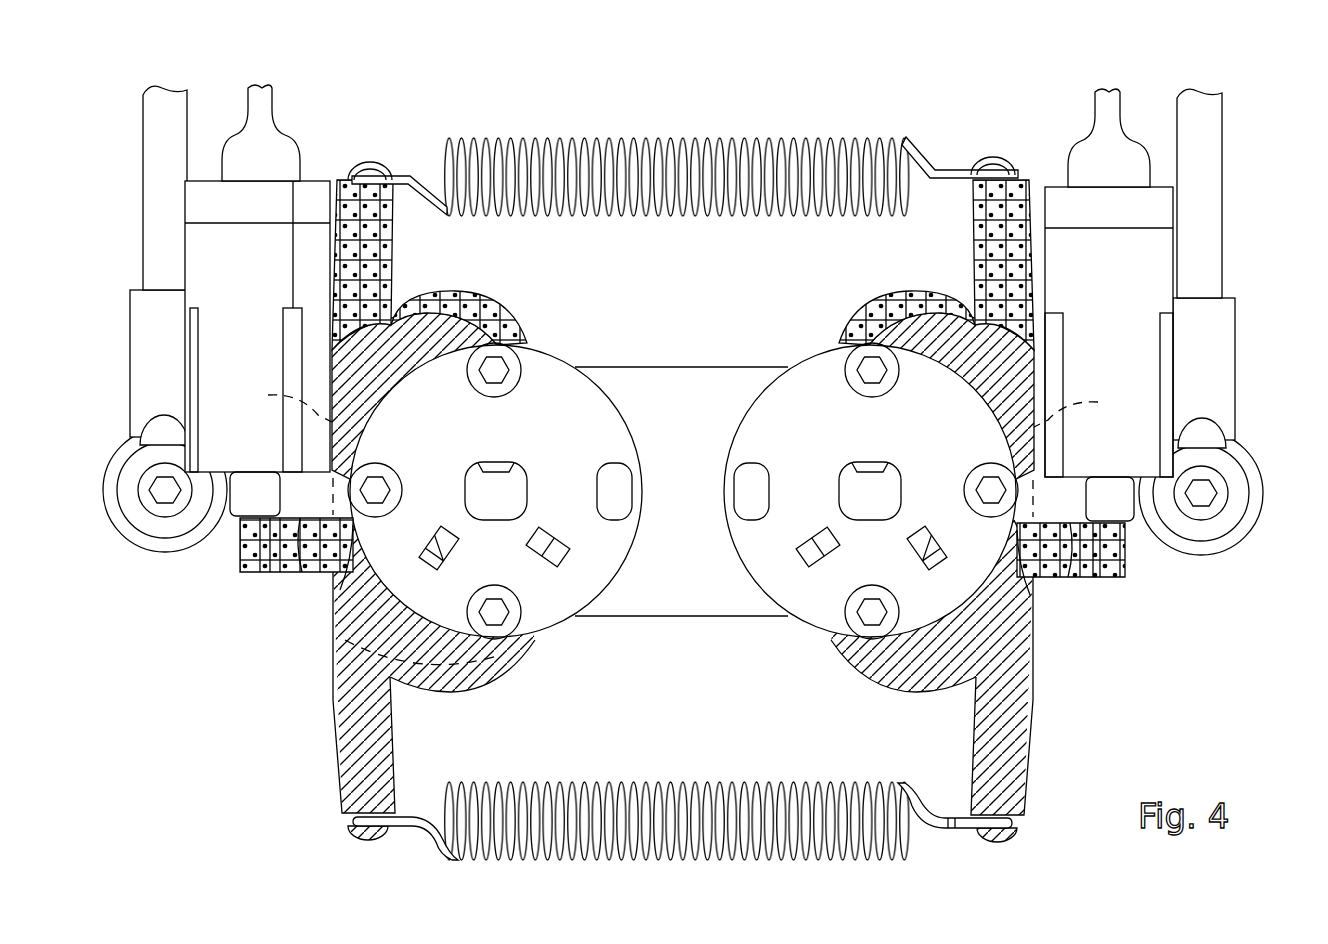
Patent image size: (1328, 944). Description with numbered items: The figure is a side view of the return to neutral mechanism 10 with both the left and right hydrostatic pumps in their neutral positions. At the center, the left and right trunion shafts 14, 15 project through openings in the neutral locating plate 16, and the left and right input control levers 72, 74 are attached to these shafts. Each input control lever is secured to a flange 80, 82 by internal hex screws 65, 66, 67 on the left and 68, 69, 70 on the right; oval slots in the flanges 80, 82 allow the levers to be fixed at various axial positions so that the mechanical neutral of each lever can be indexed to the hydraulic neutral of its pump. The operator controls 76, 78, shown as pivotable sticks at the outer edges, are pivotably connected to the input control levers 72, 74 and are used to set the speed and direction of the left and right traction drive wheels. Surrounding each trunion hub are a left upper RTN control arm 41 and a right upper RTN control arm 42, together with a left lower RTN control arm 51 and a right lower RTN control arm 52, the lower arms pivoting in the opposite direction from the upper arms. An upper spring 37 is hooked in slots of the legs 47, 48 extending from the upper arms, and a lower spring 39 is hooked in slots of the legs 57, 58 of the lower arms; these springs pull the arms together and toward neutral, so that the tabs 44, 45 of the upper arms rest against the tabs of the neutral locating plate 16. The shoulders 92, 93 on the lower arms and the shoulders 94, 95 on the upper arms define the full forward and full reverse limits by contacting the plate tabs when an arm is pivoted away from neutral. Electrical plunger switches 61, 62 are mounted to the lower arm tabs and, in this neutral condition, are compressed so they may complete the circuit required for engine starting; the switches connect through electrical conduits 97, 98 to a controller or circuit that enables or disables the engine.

The return to neutral mechanism 10 is at (965, 103).
The left input control or trunion shaft 14 is at (505, 478).
The right input control or trunion shaft 15 is at (873, 480).
The neutral locating plate 16 is at (683, 598).
The spring 37 is at (715, 218).
The spring 39 is at (700, 782).
The left upper RTN control arm 41 is at (478, 308).
The right upper RTN control arm 42 is at (878, 303).
The tab 44 is at (247, 557).
The tab 45 is at (1122, 553).
The leg 47 is at (388, 232).
The leg 48 is at (975, 232).
The left lower RTN control arm 51 is at (495, 665).
The right lower RTN control arm 52 is at (885, 670).
The leg 57 is at (395, 745).
The leg 58 is at (1022, 740).
The electrical plunger switch 61 is at (318, 186).
The electrical plunger switch 62 is at (1060, 192).
The internal hex screw 65 is at (512, 380).
The internal hex screw 66 is at (398, 468).
The internal hex screw 67 is at (502, 590).
The internal hex screw 68 is at (892, 377).
The internal hex screw 69 is at (975, 477).
The internal hex screw 70 is at (878, 592).
The left input control lever 72 is at (303, 558).
The right input control lever 74 is at (1050, 570).
The left operator control 76 is at (143, 170).
The right operator control 78 is at (1222, 160).
The flange 80 is at (544, 470).
The flange 82 is at (787, 448).
The shoulder 92 is at (328, 578).
The shoulder 93 is at (1045, 582).
The shoulder 94 is at (284, 447).
The shoulder 95 is at (1091, 452).
The electrical conduit 97 is at (252, 103).
The electrical conduit 98 is at (1117, 112).